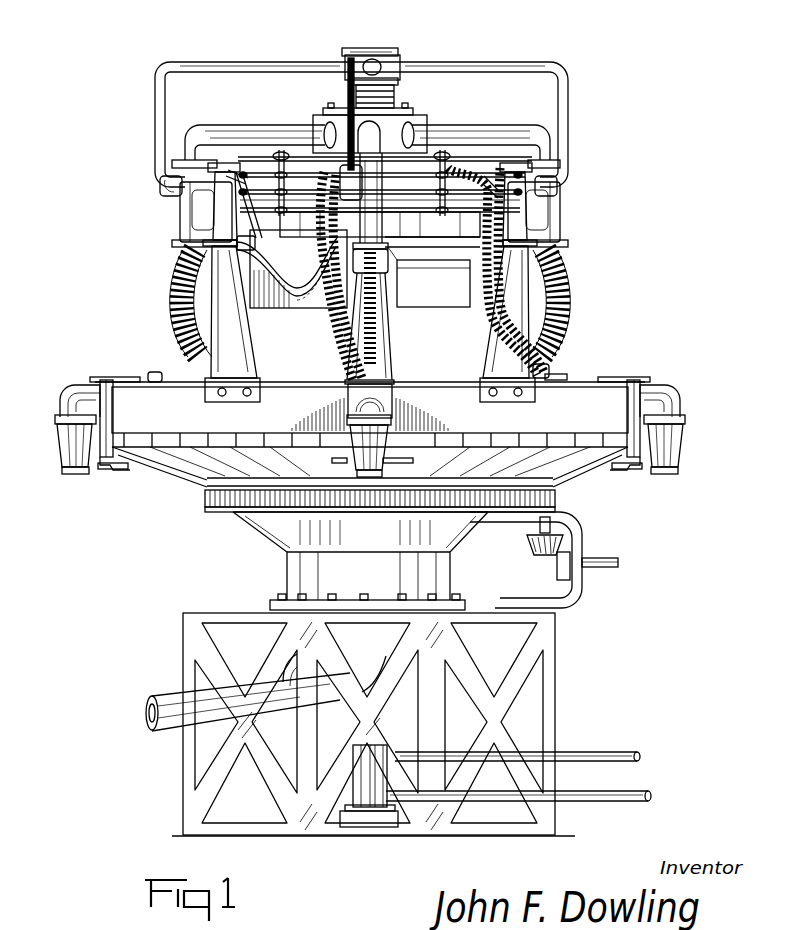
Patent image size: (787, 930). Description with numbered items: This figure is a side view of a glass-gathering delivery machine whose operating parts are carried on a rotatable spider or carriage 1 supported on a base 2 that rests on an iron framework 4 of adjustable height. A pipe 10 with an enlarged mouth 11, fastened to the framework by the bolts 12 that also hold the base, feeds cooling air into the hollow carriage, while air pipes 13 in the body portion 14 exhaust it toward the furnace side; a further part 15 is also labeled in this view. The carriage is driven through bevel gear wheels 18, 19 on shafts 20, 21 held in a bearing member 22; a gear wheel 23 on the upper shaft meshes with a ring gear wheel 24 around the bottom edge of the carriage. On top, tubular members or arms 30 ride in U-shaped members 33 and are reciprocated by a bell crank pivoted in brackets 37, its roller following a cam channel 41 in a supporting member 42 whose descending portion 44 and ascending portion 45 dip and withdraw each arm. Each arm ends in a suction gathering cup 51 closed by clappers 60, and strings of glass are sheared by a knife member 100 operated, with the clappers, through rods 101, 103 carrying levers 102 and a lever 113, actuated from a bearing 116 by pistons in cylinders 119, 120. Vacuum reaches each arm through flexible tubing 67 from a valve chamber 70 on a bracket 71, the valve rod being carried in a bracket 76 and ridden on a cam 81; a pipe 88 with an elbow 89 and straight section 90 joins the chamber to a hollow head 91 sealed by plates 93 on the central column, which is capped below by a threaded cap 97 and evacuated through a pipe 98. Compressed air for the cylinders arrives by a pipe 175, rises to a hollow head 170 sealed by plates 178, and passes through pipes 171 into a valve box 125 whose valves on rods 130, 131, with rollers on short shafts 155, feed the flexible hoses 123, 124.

The spider or carriage 1 is at (562, 470).
The base 2 is at (440, 576).
The iron framework 4 is at (557, 690).
The pipe 10 is at (175, 700).
The enlarged mouth 11 is at (545, 252).
The bolts 12 is at (302, 600).
The air pipes 13 is at (331, 460).
The body portion 14 is at (592, 466).
The rod 15 is at (270, 208).
The bevel gear wheel 18 is at (558, 570).
The bevel gear wheel 19 is at (533, 546).
The shaft 20 is at (612, 560).
The shaft 21 is at (539, 527).
The bearing member 22 is at (572, 598).
The gear wheel 23 is at (560, 502).
The ring gear wheel 24 is at (237, 520).
The tubular members or arms 30 is at (76, 393).
The U-shaped members 33 is at (134, 390).
The brackets 37 is at (244, 354).
The cam groove or channel 41 is at (403, 249).
The supporting member 42 is at (452, 264).
The descending portion 44 is at (320, 274).
The ascending portion 45 is at (268, 308).
The suction gathering mold or cup 51 is at (68, 441).
The closure members or clappers 60 is at (82, 472).
The flexible tubing 67 is at (180, 288).
The valve chamber 70 is at (187, 213).
The bracket 71 is at (207, 252).
The bracket 76 is at (224, 217).
The cam 81 is at (432, 210).
The pipe 88 is at (252, 130).
The elbow 89 is at (552, 153).
The straight section 90 is at (298, 130).
The chamber or hollow head 91 is at (326, 122).
The plates 93 is at (420, 110).
The threaded cap 97 is at (376, 828).
The pipe 98 is at (608, 802).
The knife member 100 is at (115, 468).
The rod 101 is at (632, 413).
The levers 102 is at (638, 380).
The rod 103 is at (108, 430).
The lever 113 is at (112, 377).
The bearing 116 is at (156, 374).
The cylinder 119 is at (541, 372).
The cylinder 120 is at (556, 377).
The flexible hose 123 is at (330, 322).
The flexible hose 124 is at (342, 342).
The valve box 125 is at (162, 195).
The rod 130 is at (272, 178).
The rod 131 is at (290, 191).
The short shafts 155 is at (278, 160).
The hollow head 170 is at (395, 66).
The pipes 171 is at (235, 62).
The pipe 175 is at (608, 752).
The plates 178 is at (385, 50).